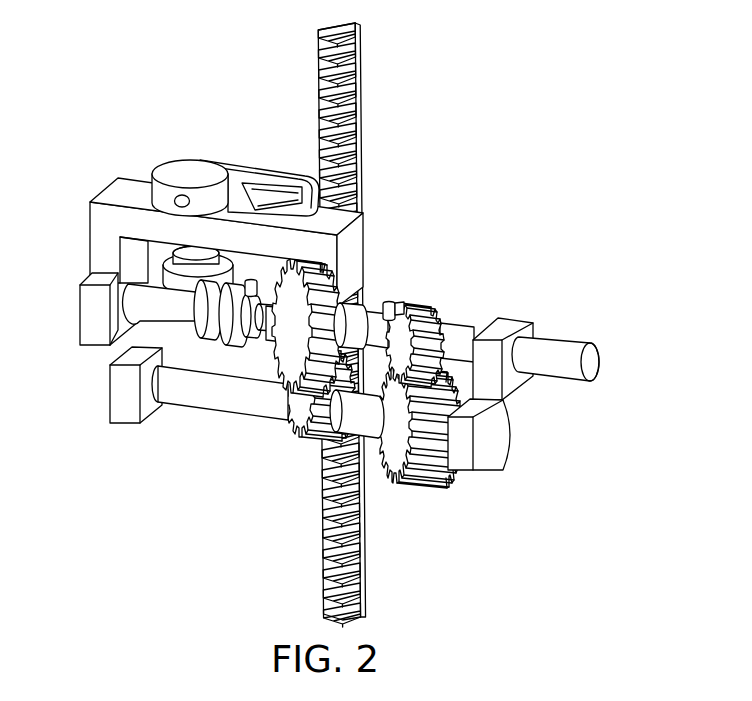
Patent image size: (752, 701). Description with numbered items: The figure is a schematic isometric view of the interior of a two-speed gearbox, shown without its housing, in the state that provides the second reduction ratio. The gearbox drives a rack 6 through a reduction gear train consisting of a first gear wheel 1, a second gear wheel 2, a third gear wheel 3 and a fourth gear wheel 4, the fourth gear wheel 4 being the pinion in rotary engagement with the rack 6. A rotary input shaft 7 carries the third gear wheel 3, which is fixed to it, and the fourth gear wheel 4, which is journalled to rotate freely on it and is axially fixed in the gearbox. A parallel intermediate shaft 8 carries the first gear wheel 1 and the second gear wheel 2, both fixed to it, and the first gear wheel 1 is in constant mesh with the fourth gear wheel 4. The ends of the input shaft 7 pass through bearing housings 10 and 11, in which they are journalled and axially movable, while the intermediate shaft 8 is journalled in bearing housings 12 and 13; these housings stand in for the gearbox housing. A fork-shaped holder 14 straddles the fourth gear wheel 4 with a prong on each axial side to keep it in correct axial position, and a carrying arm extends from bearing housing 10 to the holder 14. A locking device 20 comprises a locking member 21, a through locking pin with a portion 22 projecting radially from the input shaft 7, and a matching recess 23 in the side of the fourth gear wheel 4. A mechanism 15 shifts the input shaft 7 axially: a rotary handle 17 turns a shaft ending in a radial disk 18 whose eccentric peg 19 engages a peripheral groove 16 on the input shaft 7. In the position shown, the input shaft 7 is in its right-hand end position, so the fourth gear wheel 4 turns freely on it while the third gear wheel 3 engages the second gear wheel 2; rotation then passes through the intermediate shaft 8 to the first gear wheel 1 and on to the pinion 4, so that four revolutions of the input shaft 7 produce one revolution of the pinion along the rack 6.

The first gear wheel 1 is at (303, 432).
The second gear wheel 2 is at (412, 473).
The third gear wheel 3 is at (440, 306).
The fourth gear wheel 4 is at (278, 347).
The rack 6 is at (340, 118).
The input shaft 7 is at (571, 348).
The intermediate shaft 8 is at (203, 398).
The bearing housing 10 is at (93, 333).
The bearing housing 11 is at (511, 380).
The bearing housing 12 is at (125, 416).
The bearing housing 13 is at (493, 444).
The holder 14 is at (354, 236).
The mechanism 15 is at (281, 162).
The peripheral groove 16 is at (215, 344).
The rotary handle 17 is at (180, 168).
The radial disk 18 is at (173, 270).
The peg 19 is at (217, 302).
The locking device 20 is at (398, 275).
The locking member 21 is at (398, 303).
The portion 22 is at (433, 307).
The recess 23 is at (363, 303).